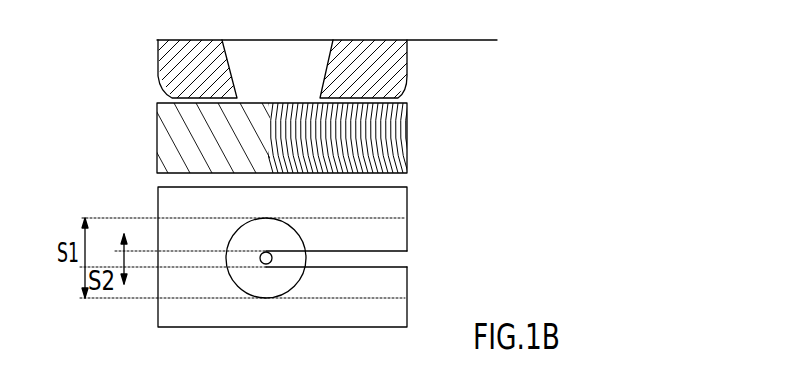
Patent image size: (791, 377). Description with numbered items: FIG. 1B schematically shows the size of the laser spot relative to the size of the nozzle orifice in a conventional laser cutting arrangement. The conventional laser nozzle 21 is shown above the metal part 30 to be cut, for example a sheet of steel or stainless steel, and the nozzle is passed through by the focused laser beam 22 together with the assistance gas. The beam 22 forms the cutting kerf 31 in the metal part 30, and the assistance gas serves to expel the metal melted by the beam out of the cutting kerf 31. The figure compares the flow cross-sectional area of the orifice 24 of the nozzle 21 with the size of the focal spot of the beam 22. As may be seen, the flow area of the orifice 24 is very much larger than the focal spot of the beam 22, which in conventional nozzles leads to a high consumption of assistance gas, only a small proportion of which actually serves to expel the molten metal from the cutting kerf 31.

The laser nozzle 21 is at (310, 71).
The laser beam 22 is at (275, 259).
The orifice 24 is at (304, 231).
The metal part 30 is at (190, 125).
The cutting kerf 31 is at (383, 142).